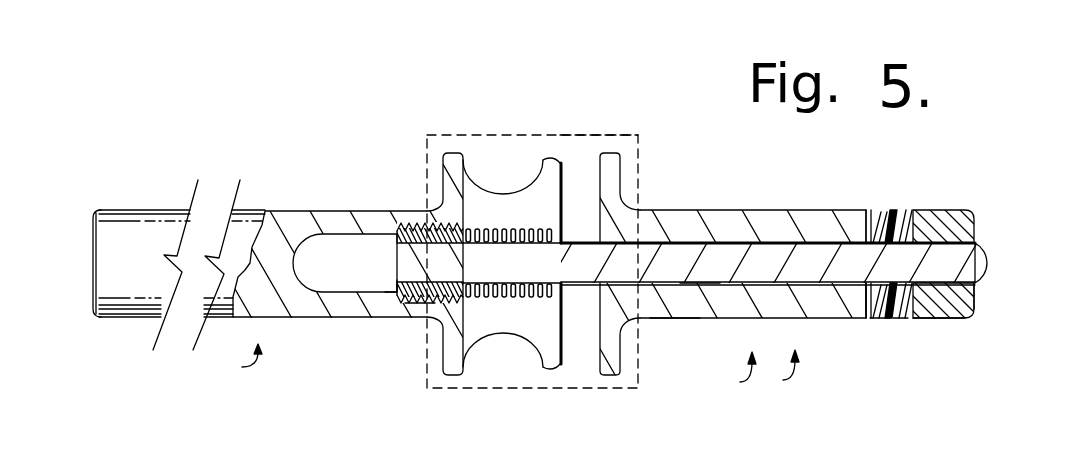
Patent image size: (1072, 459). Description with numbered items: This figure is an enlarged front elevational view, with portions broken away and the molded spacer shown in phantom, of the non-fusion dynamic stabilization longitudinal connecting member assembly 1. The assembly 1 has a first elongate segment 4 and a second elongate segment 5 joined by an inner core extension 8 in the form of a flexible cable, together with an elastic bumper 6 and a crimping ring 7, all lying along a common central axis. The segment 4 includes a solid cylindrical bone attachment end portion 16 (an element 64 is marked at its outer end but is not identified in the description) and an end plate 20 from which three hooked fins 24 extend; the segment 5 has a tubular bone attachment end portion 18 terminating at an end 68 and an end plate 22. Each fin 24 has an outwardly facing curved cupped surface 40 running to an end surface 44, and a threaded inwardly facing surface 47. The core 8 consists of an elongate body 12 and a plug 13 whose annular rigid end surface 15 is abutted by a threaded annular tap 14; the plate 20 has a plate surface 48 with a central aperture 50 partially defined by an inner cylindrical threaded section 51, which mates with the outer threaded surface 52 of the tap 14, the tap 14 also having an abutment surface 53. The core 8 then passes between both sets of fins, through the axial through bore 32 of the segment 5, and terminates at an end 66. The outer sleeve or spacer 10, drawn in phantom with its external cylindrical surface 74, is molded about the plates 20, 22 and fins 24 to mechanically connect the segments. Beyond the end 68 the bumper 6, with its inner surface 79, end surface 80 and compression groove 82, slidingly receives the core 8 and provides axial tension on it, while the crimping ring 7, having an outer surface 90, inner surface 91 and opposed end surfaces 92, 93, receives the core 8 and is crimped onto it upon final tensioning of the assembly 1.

The non-fusion dynamic stabilization longitudinal connecting member assembly 1 is at (735, 376).
The first elongate segment 4 is at (241, 363).
The second elongate segment 5 is at (778, 375).
The elastic bumper 6 is at (893, 210).
The crimping ring 7 is at (945, 210).
The inner core extension 8 is at (668, 285).
The outer sleeve or spacer 10 is at (578, 390).
The elongate body of the core cable 12 is at (758, 243).
The plug 13 is at (343, 235).
The threaded annular tap 14 is at (412, 302).
The annular rigid end surface of the plug 15 is at (410, 228).
The bone attachment end portion 16 is at (133, 317).
The bone attachment end portion 18 is at (684, 210).
The end plate 20 is at (447, 375).
The end plate 22 is at (612, 155).
The hooked fin 24 is at (557, 160).
The axial through bore 32 is at (697, 283).
The hooked cupped surface 40 is at (522, 178).
The fin end surface 44 is at (563, 176).
The threaded inwardly facing surface 47 is at (533, 242).
The plate surface 48 is at (456, 153).
The central aperture 50 is at (330, 287).
The inner cylindrical threaded section 51 is at (465, 226).
The outer threaded surface 52 is at (466, 299).
The abutment surface 53 is at (390, 293).
The end cap 64 is at (96, 317).
The end of the core cable 66 is at (988, 262).
The end of the tubular end portion 68 is at (869, 210).
The external cylindrical surface of the spacer 74 is at (600, 135).
The inner surface of the bumper 79 is at (880, 318).
The end surface of the bumper 80 is at (865, 318).
The compression groove 82 is at (902, 210).
The outer surface of the crimping ring 90 is at (944, 318).
The inner surface of the crimping ring 91 is at (920, 318).
The end surface of the crimping ring 92 is at (898, 318).
The end surface of the crimping ring 93 is at (978, 300).